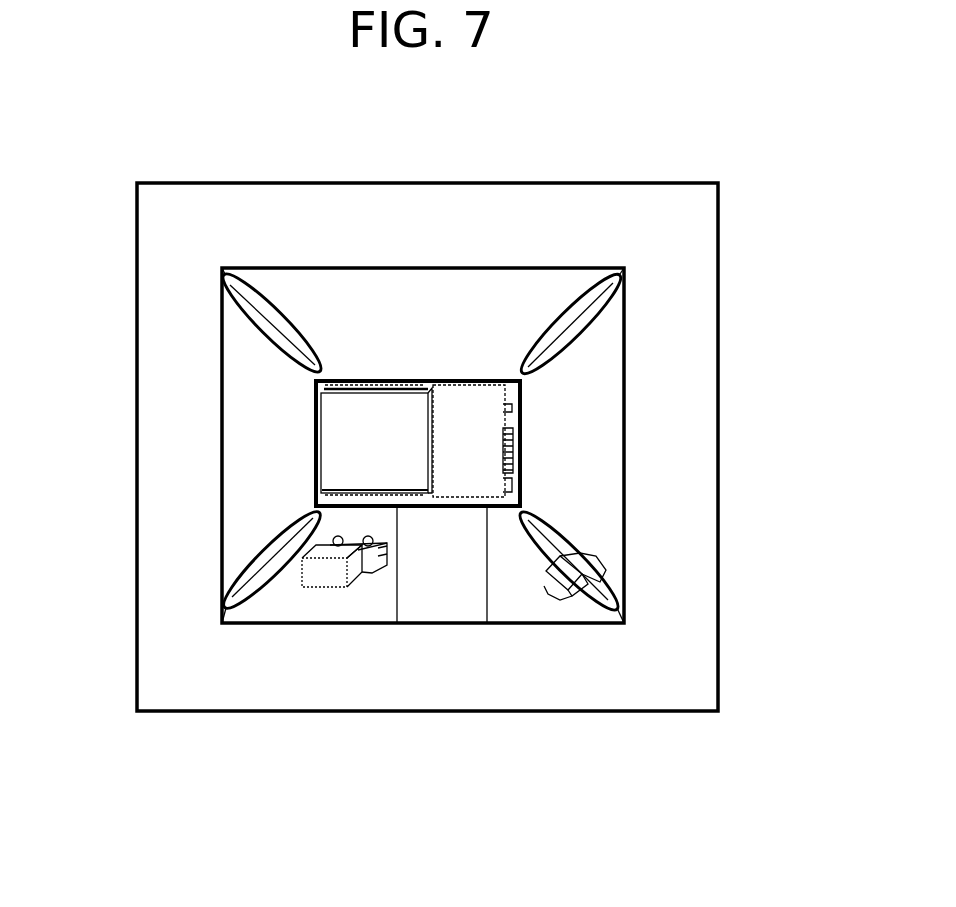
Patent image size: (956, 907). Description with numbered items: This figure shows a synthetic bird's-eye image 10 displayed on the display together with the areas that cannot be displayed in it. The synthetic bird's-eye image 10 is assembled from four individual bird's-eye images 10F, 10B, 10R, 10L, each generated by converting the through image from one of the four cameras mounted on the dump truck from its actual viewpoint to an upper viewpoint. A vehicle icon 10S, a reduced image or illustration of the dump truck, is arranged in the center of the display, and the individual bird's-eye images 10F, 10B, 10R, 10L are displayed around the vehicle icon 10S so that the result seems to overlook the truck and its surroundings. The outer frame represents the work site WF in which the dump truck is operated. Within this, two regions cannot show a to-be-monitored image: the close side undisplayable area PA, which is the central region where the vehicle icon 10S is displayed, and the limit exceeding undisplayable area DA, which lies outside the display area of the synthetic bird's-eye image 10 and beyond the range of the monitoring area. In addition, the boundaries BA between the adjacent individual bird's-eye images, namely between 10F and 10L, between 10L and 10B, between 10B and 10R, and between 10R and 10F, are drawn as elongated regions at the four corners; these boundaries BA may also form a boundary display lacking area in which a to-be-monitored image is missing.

The synthetic bird's-eye image 10 is at (572, 625).
The individual bird's-eye image (left) 10L is at (513, 283).
The individual bird's-eye image (front) 10F is at (587, 437).
The individual bird's-eye image (back) 10B is at (230, 450).
The individual bird's-eye image (right) 10R is at (327, 617).
The vehicle icon 10S is at (413, 382).
The close side undisplayable area PA is at (338, 380).
The boundaries BA is at (250, 313).
The limit exceeding undisplayable area DA is at (668, 278).
The work site WF is at (450, 714).